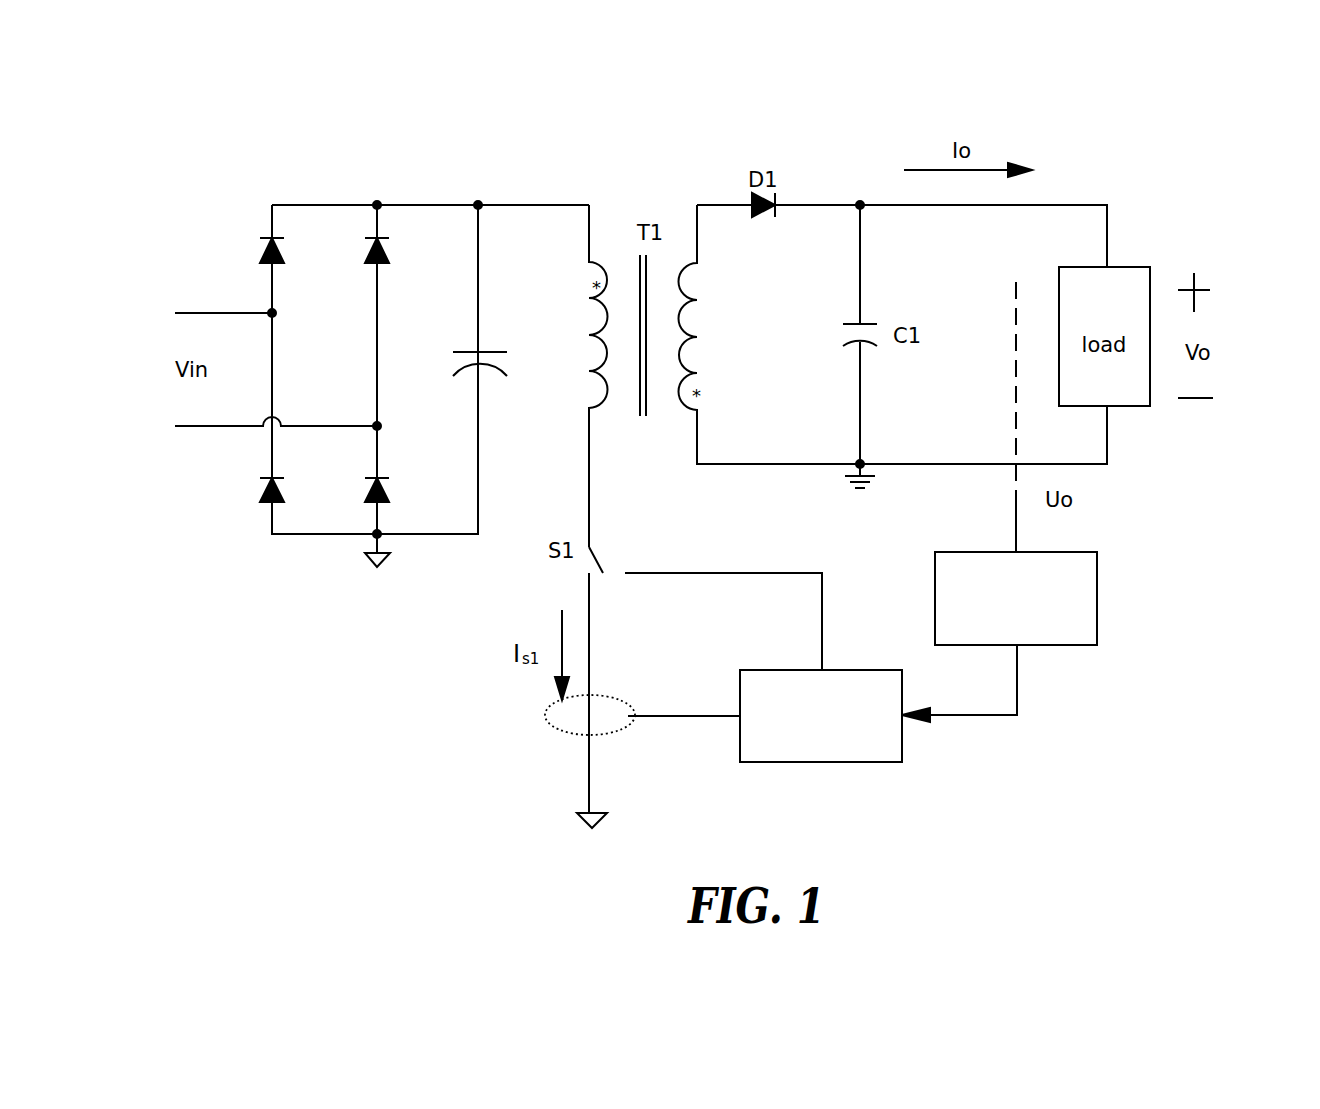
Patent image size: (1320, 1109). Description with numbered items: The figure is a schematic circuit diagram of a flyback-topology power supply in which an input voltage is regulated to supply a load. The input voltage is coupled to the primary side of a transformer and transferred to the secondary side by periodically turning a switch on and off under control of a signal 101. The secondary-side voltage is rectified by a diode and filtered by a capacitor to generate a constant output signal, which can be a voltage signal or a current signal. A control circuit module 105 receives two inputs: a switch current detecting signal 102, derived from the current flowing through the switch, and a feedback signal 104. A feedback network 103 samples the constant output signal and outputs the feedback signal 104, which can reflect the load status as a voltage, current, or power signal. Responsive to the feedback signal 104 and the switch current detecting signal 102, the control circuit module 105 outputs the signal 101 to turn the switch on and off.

The signal 101 is at (735, 573).
The switch current detecting signal 102 is at (662, 716).
The feedback network 103 is at (1097, 590).
The feedback signal 104 is at (1017, 701).
The control circuit module 105 is at (853, 762).